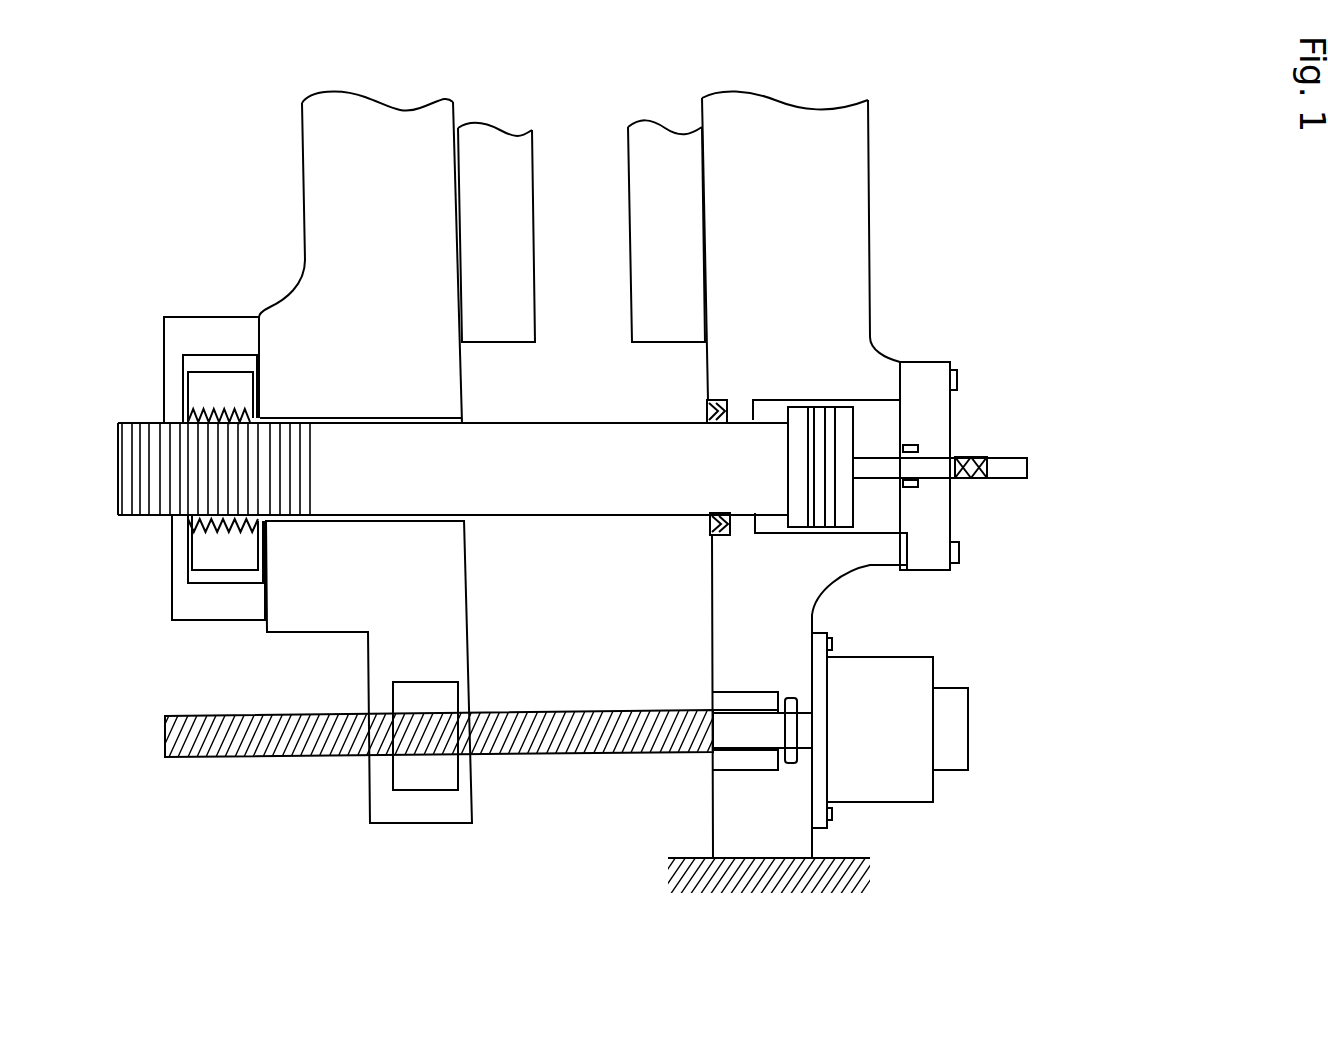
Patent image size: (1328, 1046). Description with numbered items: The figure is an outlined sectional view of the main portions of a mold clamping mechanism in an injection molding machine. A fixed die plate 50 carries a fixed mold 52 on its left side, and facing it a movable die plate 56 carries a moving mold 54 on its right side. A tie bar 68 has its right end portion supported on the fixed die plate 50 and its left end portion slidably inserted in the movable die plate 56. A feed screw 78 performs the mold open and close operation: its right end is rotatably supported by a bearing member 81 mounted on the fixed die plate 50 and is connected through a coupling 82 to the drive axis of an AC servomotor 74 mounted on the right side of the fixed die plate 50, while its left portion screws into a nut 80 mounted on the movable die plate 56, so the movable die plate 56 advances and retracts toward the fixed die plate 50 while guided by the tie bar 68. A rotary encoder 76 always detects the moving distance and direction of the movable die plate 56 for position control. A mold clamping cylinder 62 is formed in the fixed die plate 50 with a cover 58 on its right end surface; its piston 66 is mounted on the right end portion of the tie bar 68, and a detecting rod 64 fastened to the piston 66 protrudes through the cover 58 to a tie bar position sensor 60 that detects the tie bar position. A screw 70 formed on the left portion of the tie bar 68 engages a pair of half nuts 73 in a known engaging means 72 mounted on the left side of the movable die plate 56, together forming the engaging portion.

The fixed die plate 50 is at (872, 205).
The fixed mold 52 is at (628, 248).
The moving mold 54 is at (532, 203).
The movable die plate 56 is at (302, 158).
The cover 58 is at (958, 420).
The tie bar position sensor 60 is at (1000, 483).
The mold clamping cylinder 62 is at (870, 412).
The detecting rod 64 is at (930, 480).
The piston 66 is at (853, 500).
The tie bar 68 is at (580, 516).
The screw 70 is at (142, 517).
The engaging means 72 is at (200, 315).
The half nuts 73 is at (197, 390).
The AC servomotor 74 is at (895, 657).
The rotary encoder 76 is at (968, 730).
The feed screw 78 is at (540, 748).
The nut 80 is at (428, 778).
The bearing member 81 is at (742, 765).
The coupling 82 is at (790, 765).